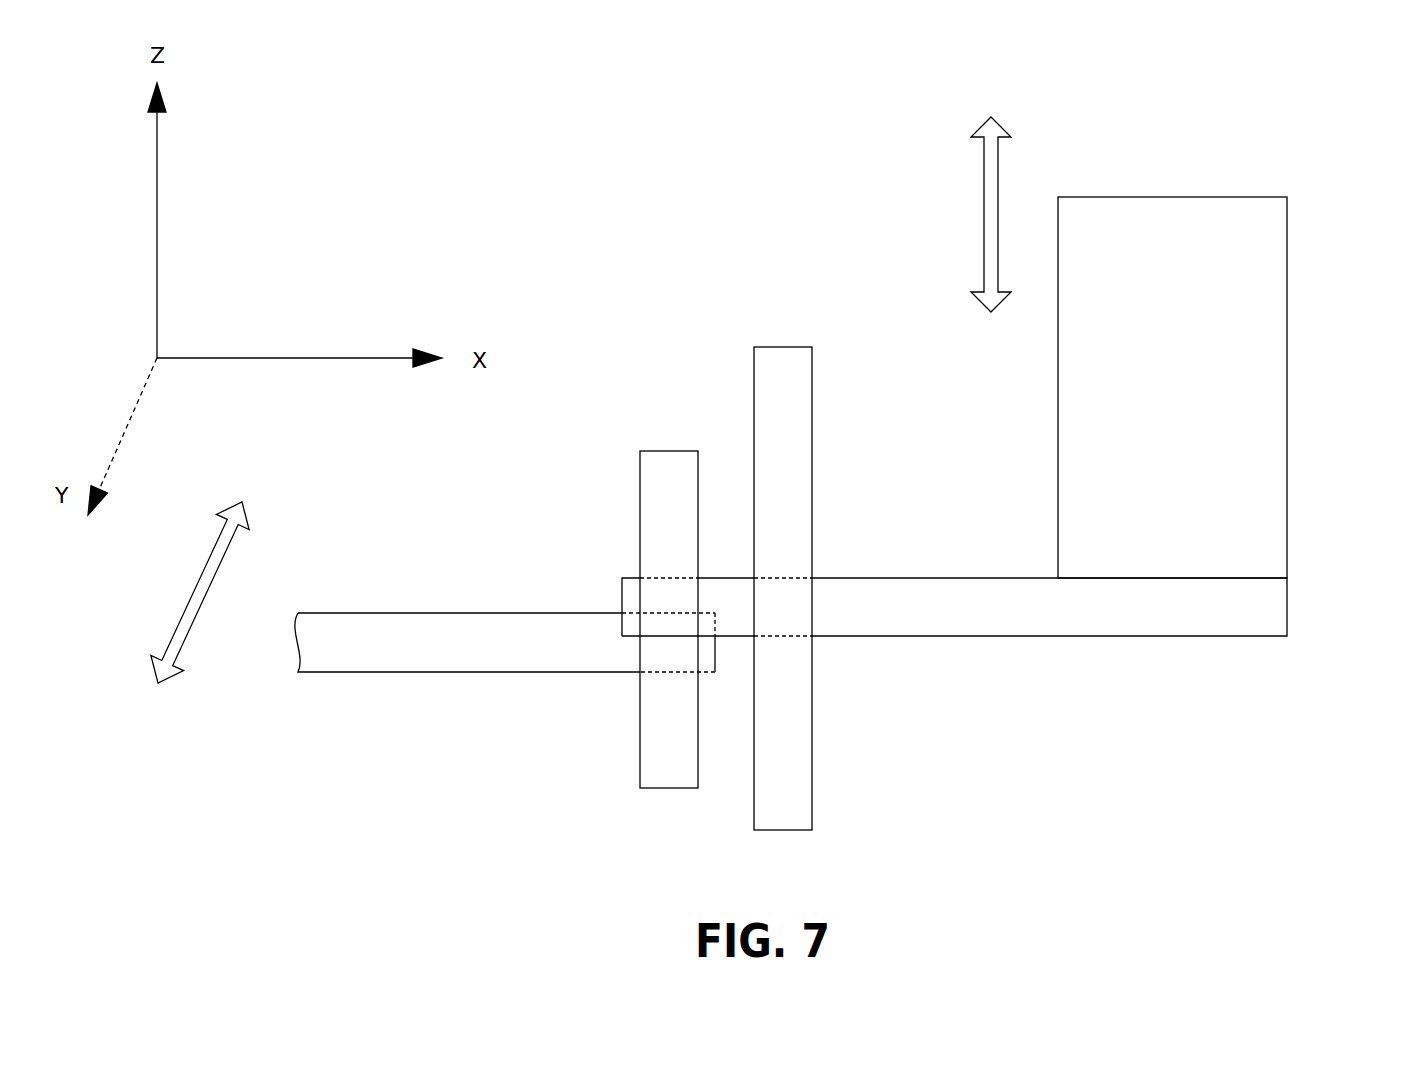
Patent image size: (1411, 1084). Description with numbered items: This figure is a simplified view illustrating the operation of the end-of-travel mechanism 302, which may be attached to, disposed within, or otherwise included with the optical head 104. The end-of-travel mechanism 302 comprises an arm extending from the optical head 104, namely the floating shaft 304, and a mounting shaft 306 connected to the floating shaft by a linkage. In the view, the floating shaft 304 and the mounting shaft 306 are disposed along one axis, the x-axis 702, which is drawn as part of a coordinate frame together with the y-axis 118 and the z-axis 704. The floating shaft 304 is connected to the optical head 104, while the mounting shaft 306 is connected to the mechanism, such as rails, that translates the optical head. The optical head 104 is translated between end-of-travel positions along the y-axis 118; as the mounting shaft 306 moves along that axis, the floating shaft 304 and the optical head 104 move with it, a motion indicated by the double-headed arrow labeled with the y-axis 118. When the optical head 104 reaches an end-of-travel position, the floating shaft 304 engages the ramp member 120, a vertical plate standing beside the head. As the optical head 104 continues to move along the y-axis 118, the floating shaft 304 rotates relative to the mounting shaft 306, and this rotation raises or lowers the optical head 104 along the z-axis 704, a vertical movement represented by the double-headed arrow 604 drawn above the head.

The optical head 104 is at (1287, 387).
The y-axis 118 is at (123, 432).
The ramp member 120 is at (812, 463).
The end-of-travel mechanism 302 is at (575, 448).
The floating shaft 304 is at (983, 636).
The mounting shaft 306 is at (383, 672).
The vertical motion arrow 604 is at (983, 194).
The x-axis 702 is at (367, 358).
The z-axis 704 is at (157, 148).